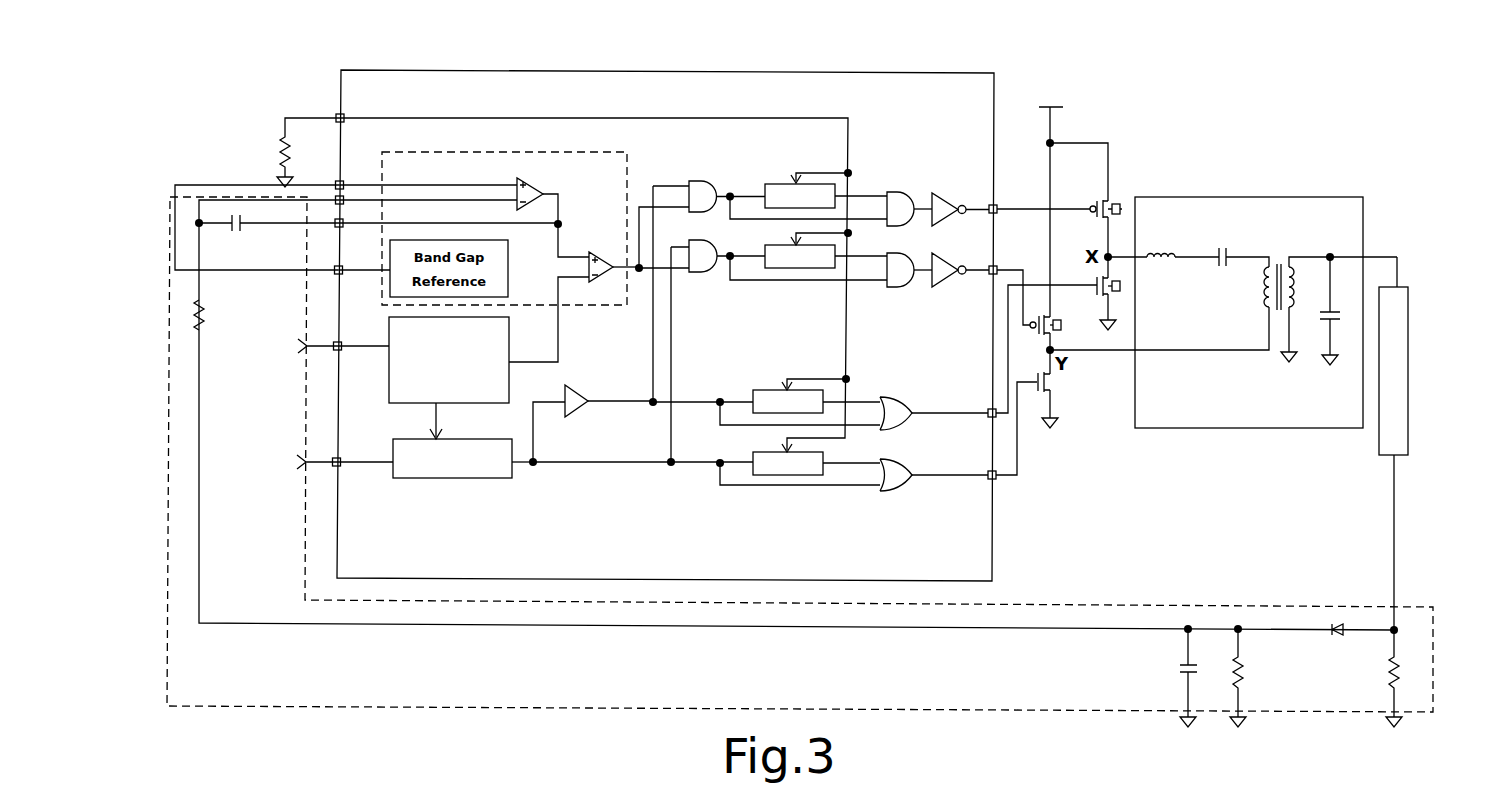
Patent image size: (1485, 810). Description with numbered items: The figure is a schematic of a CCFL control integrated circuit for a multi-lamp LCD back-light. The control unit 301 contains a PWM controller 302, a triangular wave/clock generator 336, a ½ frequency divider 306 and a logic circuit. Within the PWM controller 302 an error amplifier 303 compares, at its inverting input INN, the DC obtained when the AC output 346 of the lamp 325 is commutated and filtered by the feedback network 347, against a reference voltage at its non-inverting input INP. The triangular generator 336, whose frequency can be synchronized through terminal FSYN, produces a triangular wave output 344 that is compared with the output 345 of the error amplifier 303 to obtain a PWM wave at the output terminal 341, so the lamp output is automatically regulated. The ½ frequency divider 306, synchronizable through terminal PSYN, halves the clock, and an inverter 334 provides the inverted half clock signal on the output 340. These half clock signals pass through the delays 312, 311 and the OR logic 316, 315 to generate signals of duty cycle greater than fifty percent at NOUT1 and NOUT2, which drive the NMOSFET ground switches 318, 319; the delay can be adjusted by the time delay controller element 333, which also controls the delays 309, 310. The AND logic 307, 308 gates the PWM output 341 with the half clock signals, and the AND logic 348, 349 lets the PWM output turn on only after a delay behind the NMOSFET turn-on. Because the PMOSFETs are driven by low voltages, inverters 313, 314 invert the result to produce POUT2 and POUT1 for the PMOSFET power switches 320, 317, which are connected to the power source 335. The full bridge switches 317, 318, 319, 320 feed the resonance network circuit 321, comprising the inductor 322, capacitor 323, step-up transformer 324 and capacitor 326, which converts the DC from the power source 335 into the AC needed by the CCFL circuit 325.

The control unit 301 is at (700, 72).
The PWM controller 302 is at (592, 152).
The error amplifier 303 is at (530, 180).
The ½ frequency divider 306 is at (475, 462).
The AND logic 307 is at (700, 181).
The AND logic 308 is at (705, 263).
The delay 309 is at (773, 183).
The delay 310 is at (820, 270).
The delay 311 is at (760, 388).
The delay 312 is at (813, 477).
The inverter 313 is at (933, 193).
The inverter 314 is at (945, 288).
The OR logic 315 is at (890, 403).
The OR logic 316 is at (905, 488).
The PMOSFET power switch 317 is at (1054, 334).
The NMOSFET ground switch 318 is at (1052, 386).
The NMOSFET ground switch 319 is at (1112, 298).
The PMOSFET power switch 320 is at (1112, 198).
The resonance network circuit 321 is at (1227, 430).
The inductor 322 is at (1158, 252).
The capacitor 323 is at (1222, 248).
The step-up transformer 324 is at (1278, 265).
The CCFL circuit 325 is at (1395, 375).
The capacitor 326 is at (1318, 322).
The time delay controller element 333 is at (280, 155).
The inverter 334 is at (577, 393).
The power source 335 is at (1052, 125).
The triangular wave/clock generator 336 is at (393, 373).
The output (inverted half clock signal) 340 is at (683, 400).
The output terminal (PWM output) 341 is at (641, 272).
The triangular wave output 344 is at (558, 340).
The output of the error amplifier 345 is at (600, 254).
The AC output 346 is at (1398, 555).
The feedback network 347 is at (1320, 712).
The AND logic 348 is at (903, 193).
The AND logic 349 is at (894, 290).